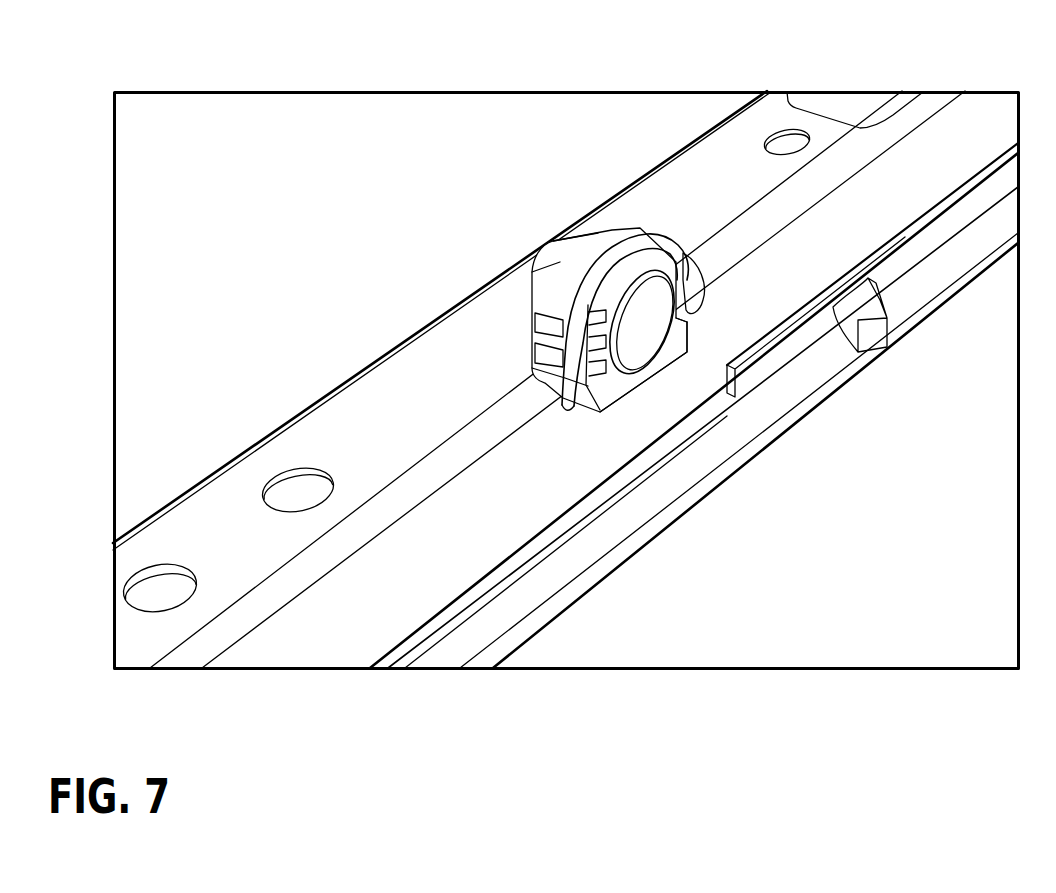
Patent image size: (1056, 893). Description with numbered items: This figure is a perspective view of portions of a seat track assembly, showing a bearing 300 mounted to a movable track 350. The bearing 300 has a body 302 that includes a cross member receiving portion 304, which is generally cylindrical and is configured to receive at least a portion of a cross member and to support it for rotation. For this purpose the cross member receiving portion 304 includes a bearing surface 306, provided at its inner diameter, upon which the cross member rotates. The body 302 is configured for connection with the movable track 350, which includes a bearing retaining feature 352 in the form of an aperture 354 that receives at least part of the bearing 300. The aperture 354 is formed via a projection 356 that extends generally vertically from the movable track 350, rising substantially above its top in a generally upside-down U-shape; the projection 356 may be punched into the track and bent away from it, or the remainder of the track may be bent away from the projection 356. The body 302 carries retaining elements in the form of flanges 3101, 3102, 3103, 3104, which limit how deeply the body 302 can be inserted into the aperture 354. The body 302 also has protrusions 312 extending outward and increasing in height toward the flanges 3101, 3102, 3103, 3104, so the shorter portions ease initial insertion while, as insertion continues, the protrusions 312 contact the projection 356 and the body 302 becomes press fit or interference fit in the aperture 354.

The bearing 300 is at (655, 299).
The body 302 is at (562, 258).
The cross member receiving portion 304 is at (624, 412).
The bearing surface 306 is at (673, 350).
The flange 3101 is at (683, 242).
The flange 3102 is at (690, 373).
The flange 3103 is at (703, 293).
The flange 3104 is at (588, 350).
The protrusion 312 is at (556, 329).
The movable track 350 is at (386, 426).
The bearing retaining feature 352 is at (705, 236).
The aperture 354 is at (600, 265).
The projection 356 is at (657, 237).